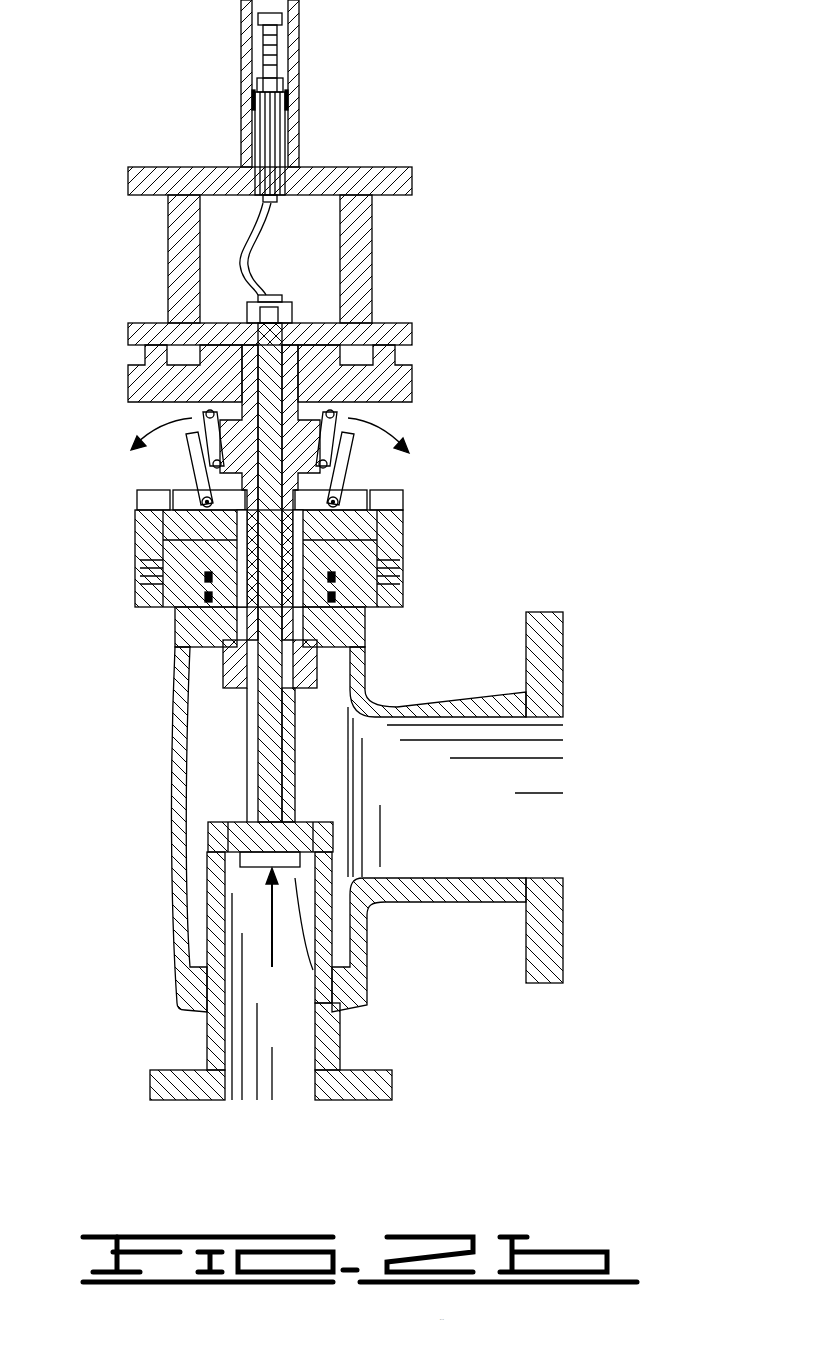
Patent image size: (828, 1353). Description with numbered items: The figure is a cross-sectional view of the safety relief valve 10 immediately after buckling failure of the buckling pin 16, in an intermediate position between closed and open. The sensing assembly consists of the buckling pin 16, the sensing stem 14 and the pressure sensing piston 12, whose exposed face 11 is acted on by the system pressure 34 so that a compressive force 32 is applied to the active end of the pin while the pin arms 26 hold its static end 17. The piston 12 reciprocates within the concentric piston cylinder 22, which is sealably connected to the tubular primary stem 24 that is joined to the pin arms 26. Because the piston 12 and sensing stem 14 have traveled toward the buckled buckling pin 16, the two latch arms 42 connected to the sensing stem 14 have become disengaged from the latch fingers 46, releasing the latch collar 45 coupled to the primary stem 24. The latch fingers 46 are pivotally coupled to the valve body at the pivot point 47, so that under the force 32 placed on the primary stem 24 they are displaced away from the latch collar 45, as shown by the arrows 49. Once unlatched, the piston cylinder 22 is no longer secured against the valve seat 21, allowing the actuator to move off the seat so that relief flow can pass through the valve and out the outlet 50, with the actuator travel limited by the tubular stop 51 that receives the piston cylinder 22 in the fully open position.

The safety relief valve 10 is at (348, 550).
The exposed face 11 is at (340, 1003).
The pressure sensing piston 12 is at (222, 862).
The sensing stem 14 is at (268, 720).
The buckling pin 16 is at (249, 260).
The static end 17 is at (283, 210).
The valve seat 21 is at (330, 870).
The piston cylinder 22 is at (212, 833).
The primary stem 24 is at (240, 708).
The pin arms 26 is at (178, 265).
The compressive force 32 is at (270, 932).
The system pressure 34 is at (307, 1002).
The latch arms 42 is at (185, 403).
The latch collar 45 is at (310, 484).
The latch fingers 46 is at (195, 450).
The pivot point 47 is at (340, 503).
The arrows 49 is at (279, 434).
The outlet 50 is at (562, 780).
The tubular stop 51 is at (330, 672).